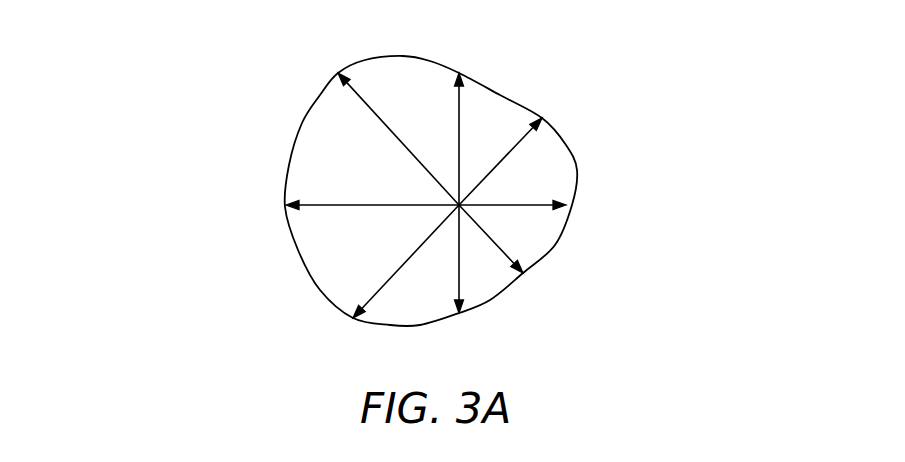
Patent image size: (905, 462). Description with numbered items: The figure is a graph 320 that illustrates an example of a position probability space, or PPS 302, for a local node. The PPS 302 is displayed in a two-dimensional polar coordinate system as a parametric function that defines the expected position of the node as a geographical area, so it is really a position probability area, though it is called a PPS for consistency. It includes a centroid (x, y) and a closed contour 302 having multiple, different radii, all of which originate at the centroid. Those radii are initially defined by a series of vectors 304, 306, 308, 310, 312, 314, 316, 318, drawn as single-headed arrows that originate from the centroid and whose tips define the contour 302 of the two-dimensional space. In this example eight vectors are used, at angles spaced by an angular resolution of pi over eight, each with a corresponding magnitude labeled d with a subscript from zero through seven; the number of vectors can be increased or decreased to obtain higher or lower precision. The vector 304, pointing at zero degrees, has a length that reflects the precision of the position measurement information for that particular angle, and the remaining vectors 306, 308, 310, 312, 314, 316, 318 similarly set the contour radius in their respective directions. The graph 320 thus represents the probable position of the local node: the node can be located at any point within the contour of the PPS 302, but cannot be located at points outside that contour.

The position probability space 302 is at (302, 123).
The vector 304 is at (572, 205).
The vector 306 is at (542, 118).
The vector 308 is at (459, 73).
The vector 310 is at (338, 73).
The vector 312 is at (286, 205).
The vector 314 is at (353, 318).
The vector 316 is at (459, 313).
The vector 318 is at (523, 273).
The graph 320 is at (104, 40).